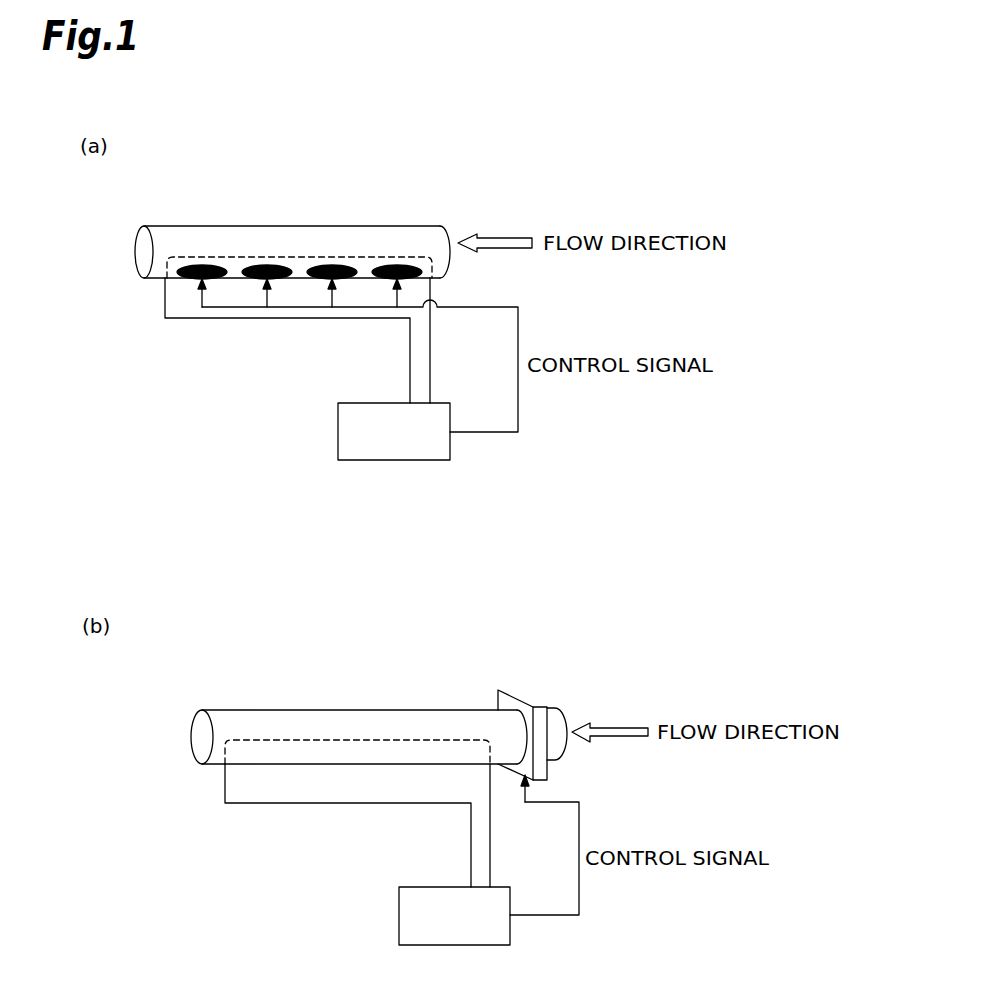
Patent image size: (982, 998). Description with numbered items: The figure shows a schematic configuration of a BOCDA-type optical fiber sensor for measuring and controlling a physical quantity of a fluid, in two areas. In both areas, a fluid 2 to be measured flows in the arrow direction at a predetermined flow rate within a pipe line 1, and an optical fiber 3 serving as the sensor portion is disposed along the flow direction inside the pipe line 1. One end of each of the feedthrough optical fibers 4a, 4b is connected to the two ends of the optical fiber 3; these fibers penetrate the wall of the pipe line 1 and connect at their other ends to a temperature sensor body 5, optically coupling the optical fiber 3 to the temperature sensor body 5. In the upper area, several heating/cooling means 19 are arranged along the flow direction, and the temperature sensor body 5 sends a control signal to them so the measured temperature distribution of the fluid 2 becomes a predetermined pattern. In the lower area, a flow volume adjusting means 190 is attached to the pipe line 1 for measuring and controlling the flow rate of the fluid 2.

The pipe line 1 is at (183, 226).
The fluid 2 is at (297, 240).
The optical fiber 3 is at (224, 257).
The feedthrough optical fiber 4a is at (433, 349).
The feedthrough optical fiber 4b is at (247, 319).
The temperature sensor body 5 is at (360, 430).
The heating/cooling means 19 is at (203, 272).
The flow volume adjusting means 190 is at (530, 697).